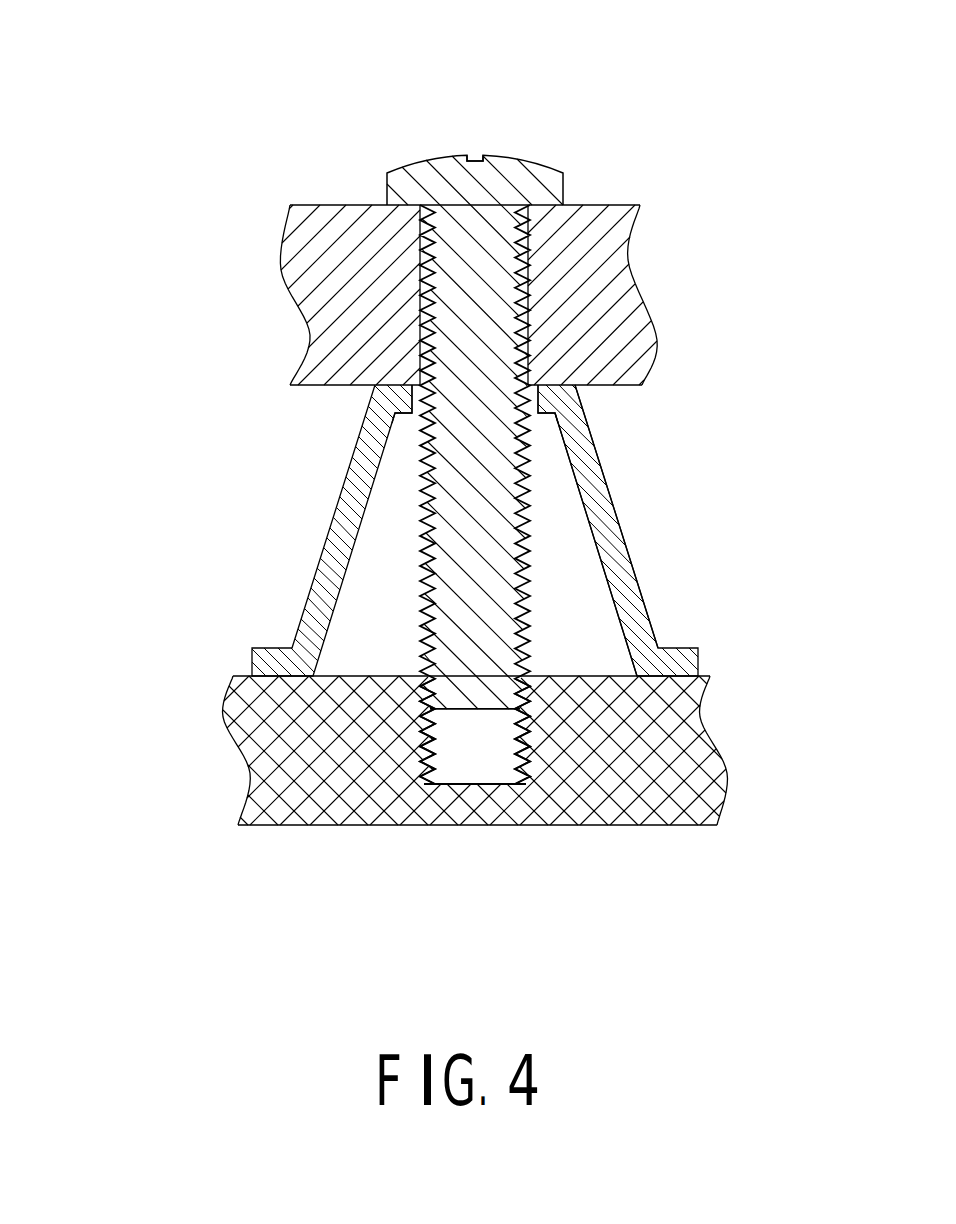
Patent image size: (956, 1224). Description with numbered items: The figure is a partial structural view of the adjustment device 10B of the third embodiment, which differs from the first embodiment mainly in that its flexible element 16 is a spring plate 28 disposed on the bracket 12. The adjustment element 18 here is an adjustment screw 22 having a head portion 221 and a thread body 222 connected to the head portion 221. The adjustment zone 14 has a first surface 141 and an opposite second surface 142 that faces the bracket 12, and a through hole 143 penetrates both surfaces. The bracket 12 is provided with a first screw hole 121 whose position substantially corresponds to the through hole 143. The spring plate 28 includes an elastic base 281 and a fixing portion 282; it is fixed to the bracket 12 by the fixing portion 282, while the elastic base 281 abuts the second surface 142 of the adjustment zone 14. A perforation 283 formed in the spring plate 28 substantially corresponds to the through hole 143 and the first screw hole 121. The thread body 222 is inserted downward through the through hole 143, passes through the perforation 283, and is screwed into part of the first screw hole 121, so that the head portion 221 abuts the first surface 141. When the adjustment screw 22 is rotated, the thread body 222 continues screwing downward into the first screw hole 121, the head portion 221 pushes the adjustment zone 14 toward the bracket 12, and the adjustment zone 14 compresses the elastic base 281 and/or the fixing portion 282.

The adjustment device 10B is at (180, 34).
The bracket 12 is at (272, 753).
The first screw hole 121 is at (472, 758).
The adjustment zone 14 is at (422, 270).
The first surface 141 is at (330, 192).
The second surface 142 is at (332, 398).
The through hole 143 is at (418, 322).
The adjustment screw 22 is at (377, 428).
The adjustment element 18 is at (475, 180).
The head portion 221 is at (488, 162).
The thread body 222 is at (465, 568).
The spring plate 28 is at (442, 530).
The flexible element 16 is at (475, 530).
The elastic base 281 is at (545, 405).
The fixing portion 282 is at (605, 517).
The perforation 283 is at (420, 395).